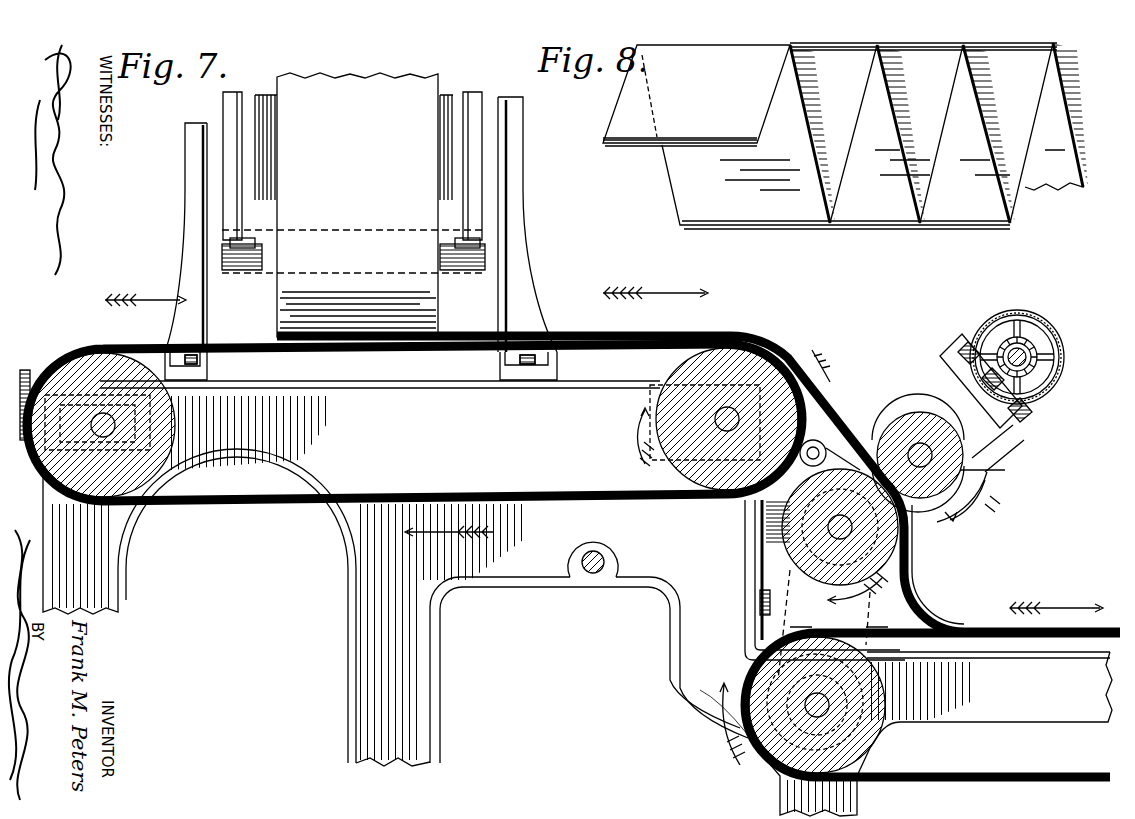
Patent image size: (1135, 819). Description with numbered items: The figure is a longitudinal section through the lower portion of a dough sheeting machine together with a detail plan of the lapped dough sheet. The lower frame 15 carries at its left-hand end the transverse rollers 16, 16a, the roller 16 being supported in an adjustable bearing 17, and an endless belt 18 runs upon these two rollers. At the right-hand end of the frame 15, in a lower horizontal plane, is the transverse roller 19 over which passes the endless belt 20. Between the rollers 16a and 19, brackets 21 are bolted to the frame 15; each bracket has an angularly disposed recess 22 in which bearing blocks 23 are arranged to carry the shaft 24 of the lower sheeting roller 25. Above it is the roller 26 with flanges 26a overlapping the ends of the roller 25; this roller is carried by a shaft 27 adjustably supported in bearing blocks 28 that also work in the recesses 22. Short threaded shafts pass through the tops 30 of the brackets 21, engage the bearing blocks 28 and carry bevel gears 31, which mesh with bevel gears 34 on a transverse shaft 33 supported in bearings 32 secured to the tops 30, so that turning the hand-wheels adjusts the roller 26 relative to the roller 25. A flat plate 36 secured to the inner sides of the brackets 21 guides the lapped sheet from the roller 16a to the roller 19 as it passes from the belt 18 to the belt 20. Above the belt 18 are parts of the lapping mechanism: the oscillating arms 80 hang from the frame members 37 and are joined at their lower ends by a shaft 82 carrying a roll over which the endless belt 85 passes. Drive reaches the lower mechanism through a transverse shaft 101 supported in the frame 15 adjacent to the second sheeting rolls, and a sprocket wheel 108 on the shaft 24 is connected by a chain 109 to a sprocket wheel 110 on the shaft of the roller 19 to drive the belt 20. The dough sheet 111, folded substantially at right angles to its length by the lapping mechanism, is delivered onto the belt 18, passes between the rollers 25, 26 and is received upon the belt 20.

In FIG. 7, the lower frame 15 is at (577, 598).
In FIG. 7, the transverse roller 16 is at (92, 368).
In FIG. 7, the transverse roller 16a is at (768, 346).
In FIG. 7, the adjustable bearing 17 is at (32, 442).
In FIG. 7, the endless belt 18 is at (222, 352).
In FIG. 7, the transverse roller 19 is at (870, 742).
In FIG. 7, the endless belt 20 is at (966, 630).
In FIG. 7, the bracket 21 is at (994, 448).
In FIG. 7, the angularly disposed recess 22 is at (1018, 420).
In FIG. 7, the bearing block 23 is at (790, 526).
In FIG. 7, the shaft 24 is at (770, 546).
In FIG. 7, the roller 25 is at (790, 562).
In FIG. 7, the roller 26 is at (1005, 472).
In FIG. 7, the flange 26a is at (906, 410).
In FIG. 7, the shaft 27 is at (876, 418).
In FIG. 7, the bearing block 28 is at (986, 482).
In FIG. 7, the bracket top 30 is at (950, 356).
In FIG. 7, the bevel gear 31 is at (1050, 386).
In FIG. 7, the bearing 32 is at (980, 384).
In FIG. 7, the transverse shaft 33 is at (1036, 326).
In FIG. 7, the bevel gear 34 is at (1040, 352).
In FIG. 7, the flat plate 36 is at (847, 394).
In FIG. 7, the frame member 37 is at (186, 236).
In FIG. 7, the oscillating arm 80 is at (238, 160).
In FIG. 7, the shaft 82 is at (222, 266).
In FIG. 7, the endless belt 85 is at (268, 268).
In FIG. 7, the transverse shaft 101 is at (590, 578).
In FIG. 7, the sprocket wheel 108 is at (913, 560).
In FIG. 7, the chain 109 is at (872, 592).
In FIG. 7, the sprocket wheel 110 is at (760, 776).
In FIG. 7, the dough sheet 111 is at (698, 352).
In FIG. 8, the dough sheet 111 is at (668, 183).